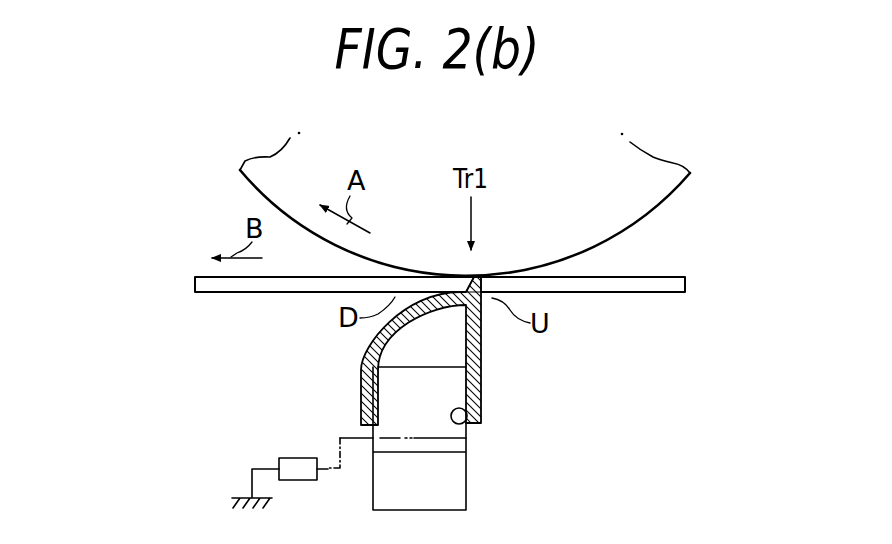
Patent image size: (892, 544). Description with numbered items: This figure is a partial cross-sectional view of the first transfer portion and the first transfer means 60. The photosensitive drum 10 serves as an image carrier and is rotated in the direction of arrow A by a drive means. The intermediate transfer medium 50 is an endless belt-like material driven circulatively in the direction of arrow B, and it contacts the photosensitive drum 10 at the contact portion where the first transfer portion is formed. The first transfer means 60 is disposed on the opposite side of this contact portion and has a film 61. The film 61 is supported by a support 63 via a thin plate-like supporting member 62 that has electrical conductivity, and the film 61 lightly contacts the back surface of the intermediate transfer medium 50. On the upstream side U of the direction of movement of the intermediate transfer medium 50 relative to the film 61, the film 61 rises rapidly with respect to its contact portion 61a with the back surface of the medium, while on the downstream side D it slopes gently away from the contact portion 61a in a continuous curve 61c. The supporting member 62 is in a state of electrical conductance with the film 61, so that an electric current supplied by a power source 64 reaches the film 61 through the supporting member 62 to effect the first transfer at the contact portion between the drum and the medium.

The photosensitive drum 10 is at (248, 184).
The intermediate transfer medium 50 is at (242, 293).
The first transfer means 60 is at (490, 369).
The film 61 is at (482, 338).
The contact portion 61a is at (473, 278).
The continuous curve 61c is at (373, 332).
The supporting member 62 is at (466, 432).
The support 63 is at (450, 490).
The power source 64 is at (297, 458).